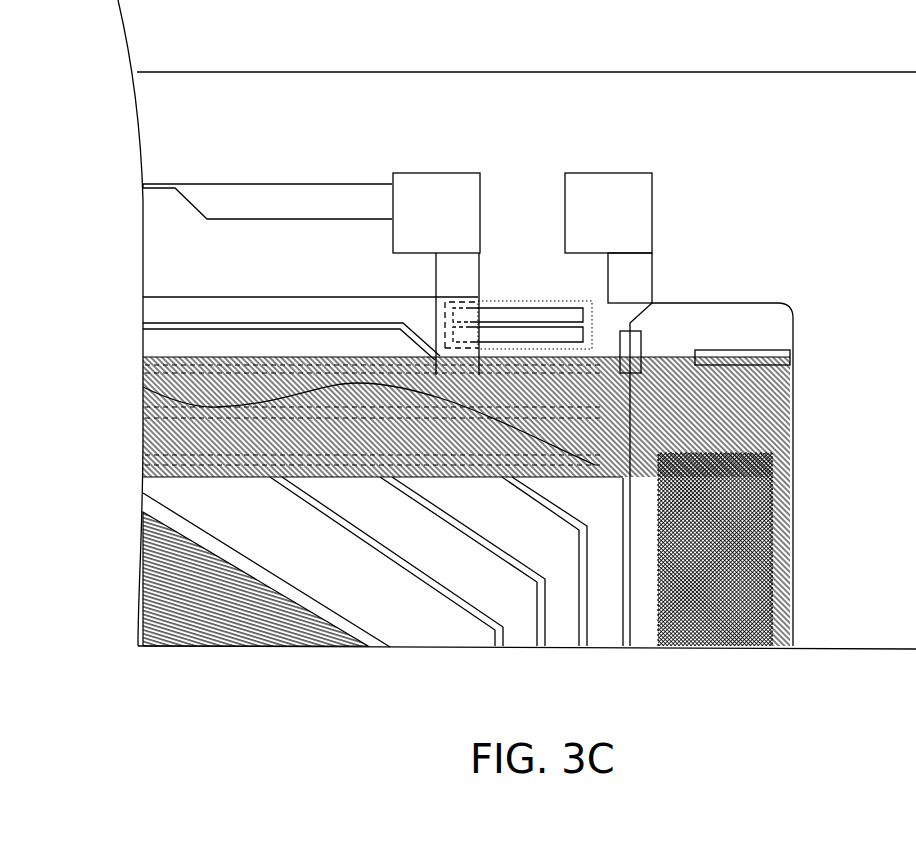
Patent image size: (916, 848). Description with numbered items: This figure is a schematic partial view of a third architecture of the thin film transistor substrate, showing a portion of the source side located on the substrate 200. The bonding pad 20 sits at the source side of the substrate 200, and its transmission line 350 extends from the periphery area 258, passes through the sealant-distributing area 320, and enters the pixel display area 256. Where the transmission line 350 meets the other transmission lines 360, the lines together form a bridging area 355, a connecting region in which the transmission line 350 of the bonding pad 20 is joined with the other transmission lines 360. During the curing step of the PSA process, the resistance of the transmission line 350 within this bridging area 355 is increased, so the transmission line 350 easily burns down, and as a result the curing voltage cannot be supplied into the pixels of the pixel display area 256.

The bonding pad 20 is at (435, 183).
The transmission line 350 is at (457, 280).
The periphery area 258 is at (288, 252).
The other transmission lines 360 is at (178, 343).
The bridging area 355 is at (143, 387).
The sealant-distributing area 320 is at (208, 447).
The pixel display area 256 is at (292, 582).
The substrate 200 is at (870, 652).